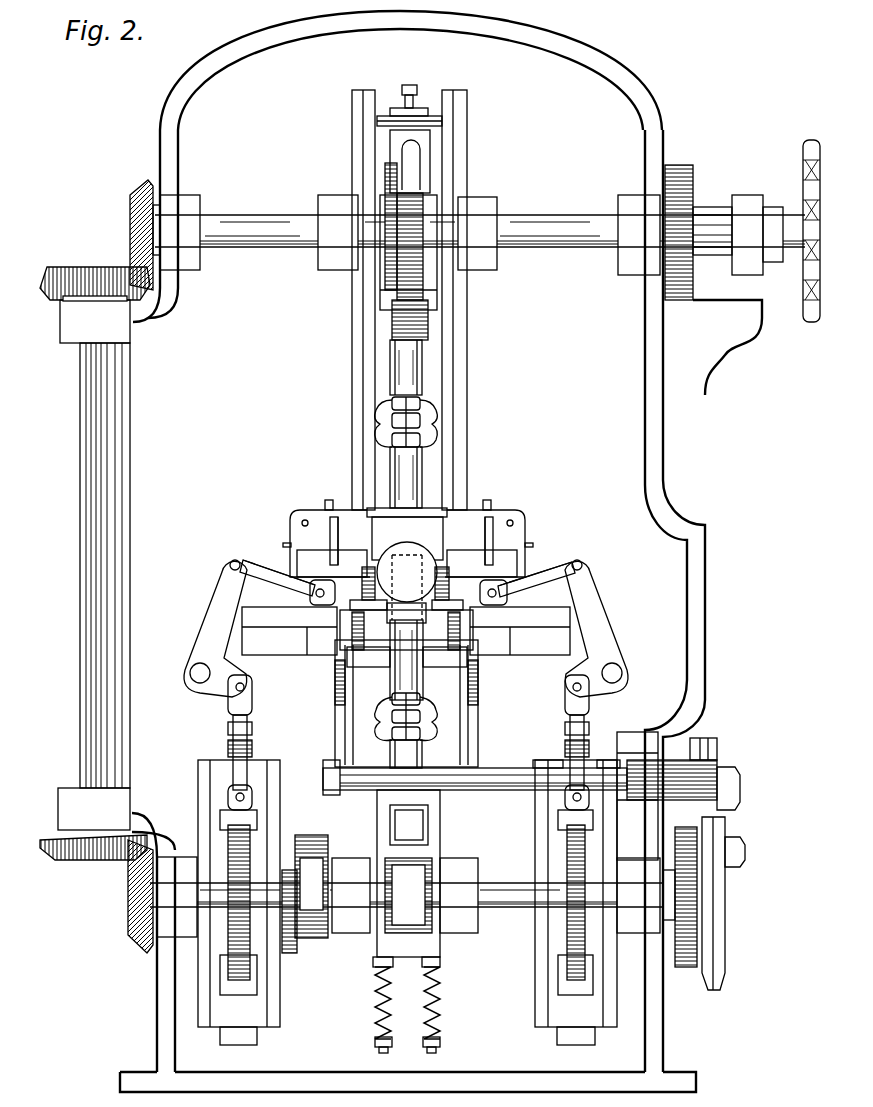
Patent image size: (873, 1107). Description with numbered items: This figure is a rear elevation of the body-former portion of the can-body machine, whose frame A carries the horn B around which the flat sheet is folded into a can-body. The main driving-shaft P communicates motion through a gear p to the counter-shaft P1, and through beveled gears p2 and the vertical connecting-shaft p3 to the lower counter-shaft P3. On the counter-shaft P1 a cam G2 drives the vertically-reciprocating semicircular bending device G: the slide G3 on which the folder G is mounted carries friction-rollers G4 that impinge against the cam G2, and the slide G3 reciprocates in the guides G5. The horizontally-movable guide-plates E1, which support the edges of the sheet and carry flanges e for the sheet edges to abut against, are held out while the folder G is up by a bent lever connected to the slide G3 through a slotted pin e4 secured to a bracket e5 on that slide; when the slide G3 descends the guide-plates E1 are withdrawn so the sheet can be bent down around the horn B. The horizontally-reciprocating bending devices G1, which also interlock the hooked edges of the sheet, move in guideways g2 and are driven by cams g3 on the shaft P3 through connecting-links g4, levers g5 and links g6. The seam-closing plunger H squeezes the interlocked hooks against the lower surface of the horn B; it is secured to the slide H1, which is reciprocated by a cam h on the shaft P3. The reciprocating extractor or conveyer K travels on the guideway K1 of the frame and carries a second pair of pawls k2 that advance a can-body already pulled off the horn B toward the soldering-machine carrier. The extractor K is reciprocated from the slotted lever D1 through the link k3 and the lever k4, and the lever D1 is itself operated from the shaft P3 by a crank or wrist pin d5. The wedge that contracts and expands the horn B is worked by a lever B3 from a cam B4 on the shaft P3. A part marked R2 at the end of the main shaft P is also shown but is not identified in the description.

The frame A is at (410, 551).
The counter-shaft P1 is at (252, 224).
The beveled gears p2 is at (138, 192).
The vertical connecting-shaft p3 is at (92, 378).
The gear p is at (692, 170).
The main driving-shaft P is at (790, 218).
The chain wheel R2 is at (804, 150).
The guides G5 is at (458, 176).
The slide G3 is at (421, 148).
The friction-rollers G4 is at (388, 170).
The cam G2 is at (415, 228).
The bending device G is at (433, 543).
The horizontally-reciprocating bending devices G1 is at (300, 565).
The guide-plates E1 is at (290, 540).
The bracket e5 is at (341, 508).
The vertical flanges e is at (345, 545).
The slotted pin e4 is at (348, 531).
The horn B is at (407, 581).
The pawls k2 is at (448, 580).
The seam-closing device H is at (406, 614).
The extractor K is at (463, 608).
The guideway K1 is at (448, 622).
The slide H1 is at (424, 680).
The lever k4 is at (370, 708).
The links g6 is at (290, 578).
The levers g5 is at (212, 603).
The guideways g2 is at (290, 618).
The connecting-links g4 is at (232, 730).
The link k3 is at (715, 748).
The cams g3 is at (228, 922).
The lower counter-shaft P3 is at (502, 908).
The lever B3 is at (303, 942).
The cam B4 is at (323, 938).
The cam h is at (406, 921).
The slotted lever D1 is at (727, 918).
The wrist pin d5 is at (746, 852).